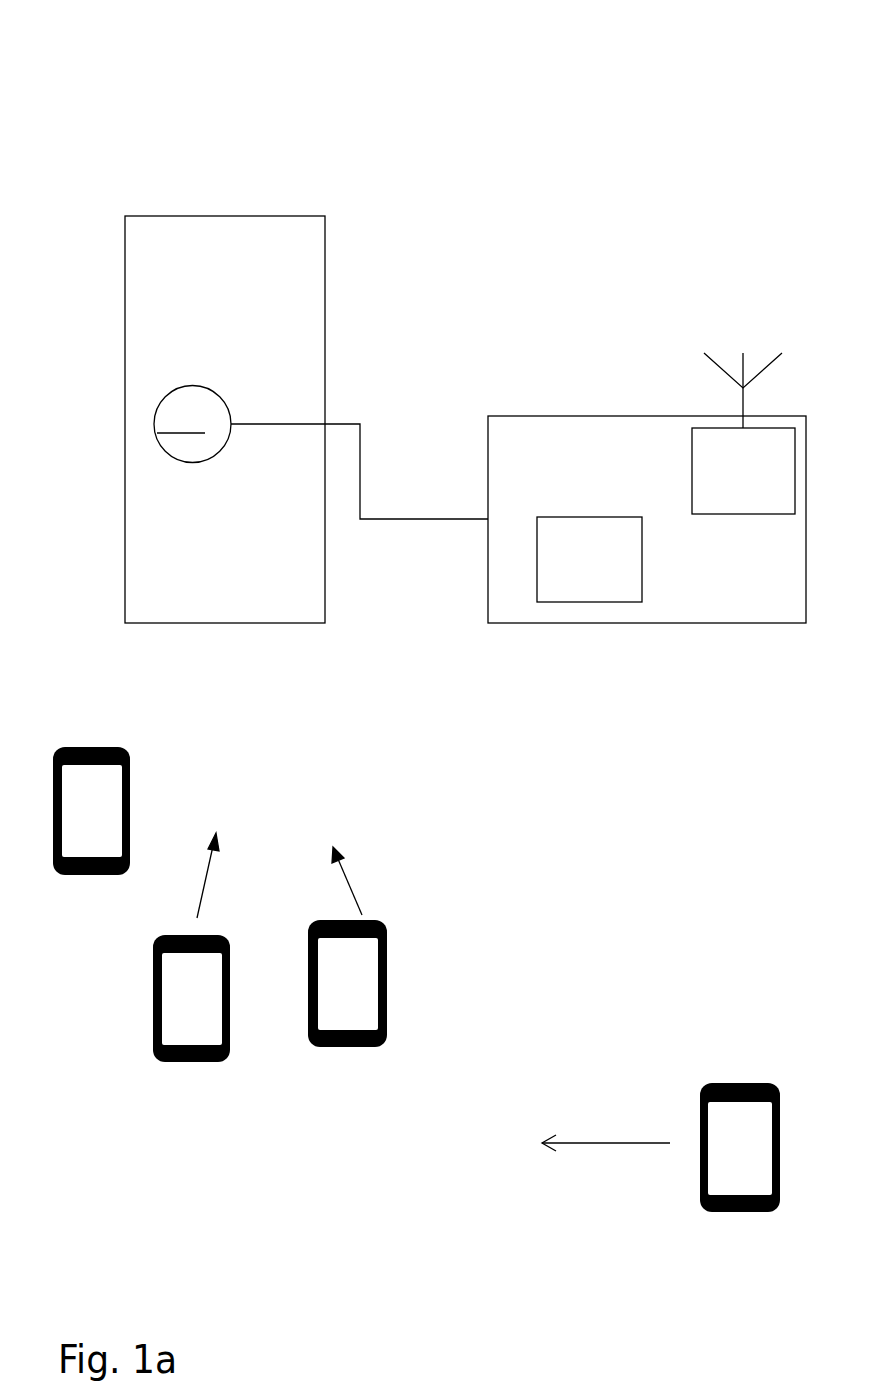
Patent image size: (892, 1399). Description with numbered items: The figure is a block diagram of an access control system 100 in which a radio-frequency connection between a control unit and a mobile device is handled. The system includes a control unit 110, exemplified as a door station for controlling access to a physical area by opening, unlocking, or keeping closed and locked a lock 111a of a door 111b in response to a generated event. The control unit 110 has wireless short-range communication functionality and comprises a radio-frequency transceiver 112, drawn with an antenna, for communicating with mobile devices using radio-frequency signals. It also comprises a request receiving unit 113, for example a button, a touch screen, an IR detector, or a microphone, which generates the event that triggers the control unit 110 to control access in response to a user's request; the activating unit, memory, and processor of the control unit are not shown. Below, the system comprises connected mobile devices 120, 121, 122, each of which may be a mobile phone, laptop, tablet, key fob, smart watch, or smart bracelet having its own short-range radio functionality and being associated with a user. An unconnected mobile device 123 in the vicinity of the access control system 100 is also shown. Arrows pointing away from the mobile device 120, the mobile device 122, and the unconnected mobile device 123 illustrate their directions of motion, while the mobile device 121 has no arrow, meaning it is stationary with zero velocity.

The access control system 100 is at (636, 165).
The control unit 110 is at (575, 470).
The lock 111a is at (198, 462).
The door 111b is at (325, 558).
The radio-frequency transceiver 112 is at (760, 486).
The request receiving unit 113 is at (607, 573).
The connected mobile device 120 is at (214, 947).
The connected mobile device 121 is at (114, 785).
The connected mobile device 122 is at (682, 1128).
The unconnected mobile device 123 is at (370, 947).